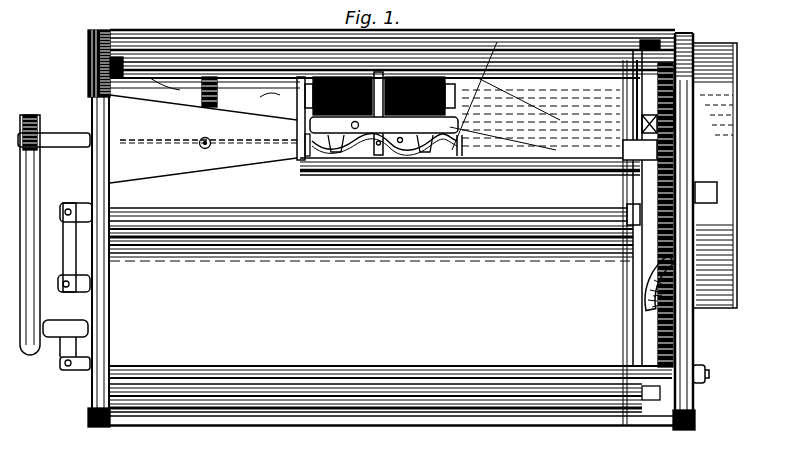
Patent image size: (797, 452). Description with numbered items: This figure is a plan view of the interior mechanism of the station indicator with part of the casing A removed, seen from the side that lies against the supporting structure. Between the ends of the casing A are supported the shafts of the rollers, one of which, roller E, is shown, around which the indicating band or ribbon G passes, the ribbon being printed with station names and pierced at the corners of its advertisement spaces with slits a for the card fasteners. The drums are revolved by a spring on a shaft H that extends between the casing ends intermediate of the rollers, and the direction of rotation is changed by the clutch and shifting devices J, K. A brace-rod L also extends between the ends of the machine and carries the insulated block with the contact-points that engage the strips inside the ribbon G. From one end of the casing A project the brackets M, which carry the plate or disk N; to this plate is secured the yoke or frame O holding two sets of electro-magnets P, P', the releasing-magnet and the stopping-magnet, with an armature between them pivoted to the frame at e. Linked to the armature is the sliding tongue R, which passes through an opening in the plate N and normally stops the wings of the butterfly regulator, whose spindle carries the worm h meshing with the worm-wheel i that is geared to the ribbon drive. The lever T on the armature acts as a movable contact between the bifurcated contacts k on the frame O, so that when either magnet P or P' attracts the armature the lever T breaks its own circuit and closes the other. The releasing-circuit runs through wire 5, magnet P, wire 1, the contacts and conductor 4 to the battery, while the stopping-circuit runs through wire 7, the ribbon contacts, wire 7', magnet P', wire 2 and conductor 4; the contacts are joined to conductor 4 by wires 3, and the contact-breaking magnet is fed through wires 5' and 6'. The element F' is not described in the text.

The casing A is at (93, 68).
The conducting-wire 7 is at (440, 122).
The conducting-wire 5' is at (509, 29).
The conducting-wire 6' is at (627, 32).
The conductor 4 is at (168, 87).
The worm-wheel i is at (218, 96).
The conducting-wire 5 is at (270, 92).
The conducting-wire 1 is at (298, 118).
The releasing-magnet P is at (338, 105).
The yoke or frame O is at (384, 125).
The pivot e is at (399, 131).
The stopping-magnet P' is at (420, 105).
The slits a is at (451, 111).
The clutch and shifting device J is at (581, 72).
The roller E is at (640, 100).
The brackets M is at (203, 139).
The worm h is at (204, 149).
The plate or disk N is at (301, 169).
The sliding or movable tongue R is at (343, 168).
The split or bifurcated metal contacts k is at (444, 170).
The conducting-wires 3 is at (368, 170).
The lever T is at (414, 169).
The conducting-wire 2 is at (464, 172).
The shaft H is at (508, 173).
The conducting-wire 7' is at (541, 188).
The clutch and shifting device K is at (55, 242).
The indicating band or ribbon G is at (371, 265).
The gear segment F' is at (638, 283).
The brace-rod L is at (665, 270).